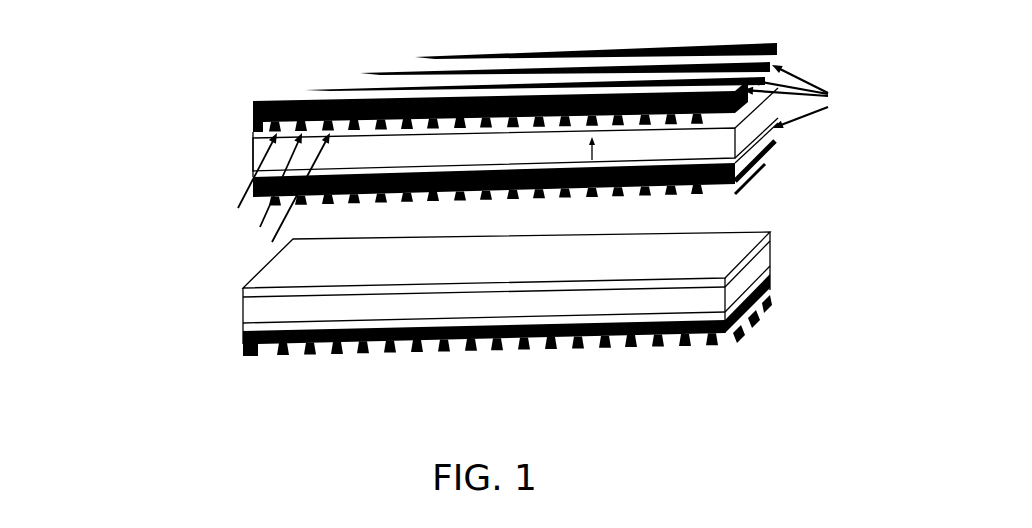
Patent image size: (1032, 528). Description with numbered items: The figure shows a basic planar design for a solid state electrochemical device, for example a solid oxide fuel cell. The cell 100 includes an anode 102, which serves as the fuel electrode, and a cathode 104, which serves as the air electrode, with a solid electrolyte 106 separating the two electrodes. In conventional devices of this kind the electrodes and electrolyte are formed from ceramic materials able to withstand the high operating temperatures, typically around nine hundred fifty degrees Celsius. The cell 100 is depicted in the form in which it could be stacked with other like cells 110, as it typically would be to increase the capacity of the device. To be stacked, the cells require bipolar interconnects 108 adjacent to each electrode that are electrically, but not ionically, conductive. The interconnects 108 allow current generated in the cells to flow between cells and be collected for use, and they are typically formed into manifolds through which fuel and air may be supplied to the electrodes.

The cell 100 is at (155, 122).
The anode 102 is at (254, 138).
The cathode 104 is at (793, 86).
The solid electrolyte 106 is at (790, 78).
The bipolar interconnects 108 is at (254, 110).
The like cells 110 is at (797, 252).